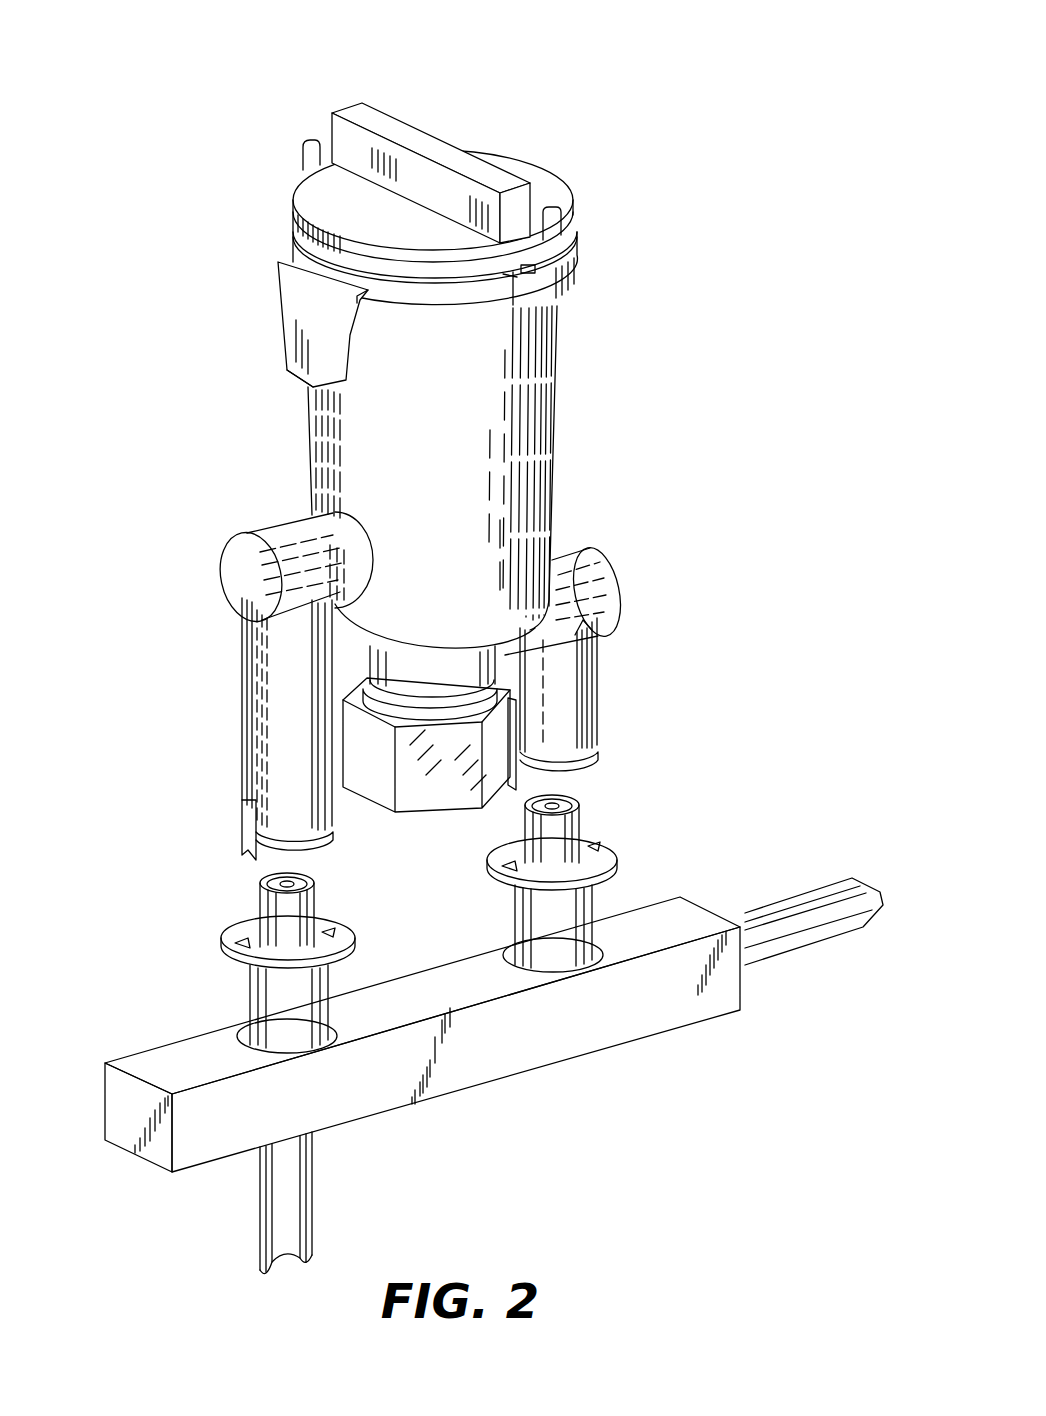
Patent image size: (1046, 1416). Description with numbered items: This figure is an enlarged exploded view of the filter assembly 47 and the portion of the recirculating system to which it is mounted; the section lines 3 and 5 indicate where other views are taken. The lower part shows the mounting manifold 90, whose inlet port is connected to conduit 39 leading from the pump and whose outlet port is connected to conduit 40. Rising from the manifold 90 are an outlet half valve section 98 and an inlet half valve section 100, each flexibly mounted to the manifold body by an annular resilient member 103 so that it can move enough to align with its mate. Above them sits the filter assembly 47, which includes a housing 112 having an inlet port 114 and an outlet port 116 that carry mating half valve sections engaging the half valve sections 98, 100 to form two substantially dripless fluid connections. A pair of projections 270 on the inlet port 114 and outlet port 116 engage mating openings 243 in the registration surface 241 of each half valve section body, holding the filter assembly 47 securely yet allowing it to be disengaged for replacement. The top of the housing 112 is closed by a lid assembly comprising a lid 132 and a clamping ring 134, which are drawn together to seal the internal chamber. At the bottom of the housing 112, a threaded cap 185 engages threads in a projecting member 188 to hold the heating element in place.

The section line 3- 3 is at (707, 43).
The section line 5- 5 is at (358, 65).
The conduit 39 is at (262, 1245).
The conduit 40 is at (808, 892).
The filter assembly 47 is at (462, 477).
The mounting manifold 90 is at (754, 1006).
The outlet half valve section 98 is at (250, 996).
The inlet half valve section 100 is at (590, 905).
The annular resilient member 103 is at (240, 1028).
The housing 112 is at (308, 440).
The inlet port 114 is at (242, 706).
The outlet port 116 is at (600, 698).
The lid 132 is at (575, 192).
The clamping ring 134 is at (578, 244).
The threaded cap 185 is at (362, 755).
The projecting member 188 is at (372, 695).
The registration surface 241 is at (248, 932).
The mating opening 243 is at (238, 946).
The projections 270 is at (242, 852).